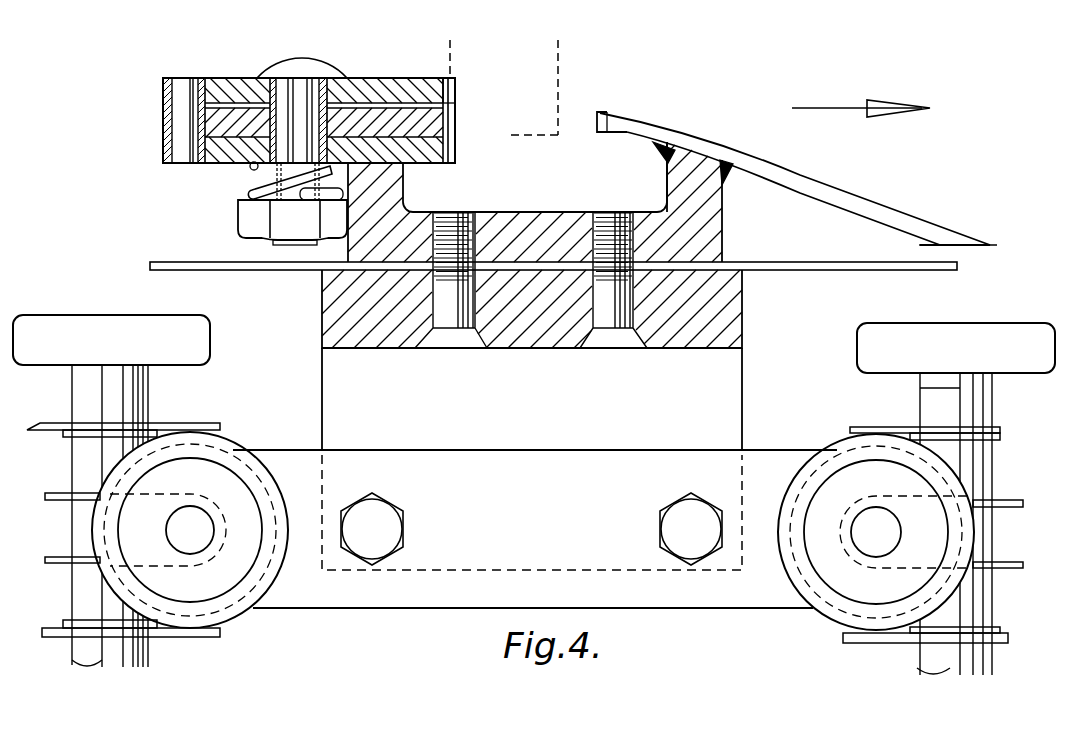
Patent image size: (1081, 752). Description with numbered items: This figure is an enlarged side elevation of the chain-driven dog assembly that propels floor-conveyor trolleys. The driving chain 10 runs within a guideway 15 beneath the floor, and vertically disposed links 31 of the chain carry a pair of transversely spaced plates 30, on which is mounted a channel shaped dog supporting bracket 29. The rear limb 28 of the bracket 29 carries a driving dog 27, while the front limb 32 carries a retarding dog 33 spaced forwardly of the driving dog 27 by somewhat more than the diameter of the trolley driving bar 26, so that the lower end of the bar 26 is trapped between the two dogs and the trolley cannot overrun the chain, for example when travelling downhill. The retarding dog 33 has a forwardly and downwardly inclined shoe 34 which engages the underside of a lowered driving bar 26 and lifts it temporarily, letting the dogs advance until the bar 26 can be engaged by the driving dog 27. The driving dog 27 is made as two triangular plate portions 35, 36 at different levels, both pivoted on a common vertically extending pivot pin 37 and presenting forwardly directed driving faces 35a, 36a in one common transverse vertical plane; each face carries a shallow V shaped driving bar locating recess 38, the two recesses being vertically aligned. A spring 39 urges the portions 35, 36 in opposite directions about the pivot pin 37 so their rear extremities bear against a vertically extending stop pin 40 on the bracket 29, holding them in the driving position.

The driving chain 10 is at (849, 427).
The guideway 15 is at (357, 90).
The trolley driving bar 26 is at (553, 95).
The driving dog 27 is at (395, 79).
The rear limb 28 is at (398, 210).
The dog supporting bracket 29 is at (542, 221).
The plates 30 is at (322, 407).
The links 31 is at (445, 594).
The front limb 32 is at (714, 230).
The retarding dog 33 is at (607, 118).
The shoe 34 is at (878, 208).
The dog portion 35 is at (446, 88).
The driving face 35a is at (457, 99).
The dog portion 36 is at (457, 118).
The driving face 36a is at (453, 131).
The pivot pin 37 is at (290, 104).
The driving bar locating recess 38 is at (451, 79).
The spring 39 is at (250, 192).
The stop pin 40 is at (168, 113).